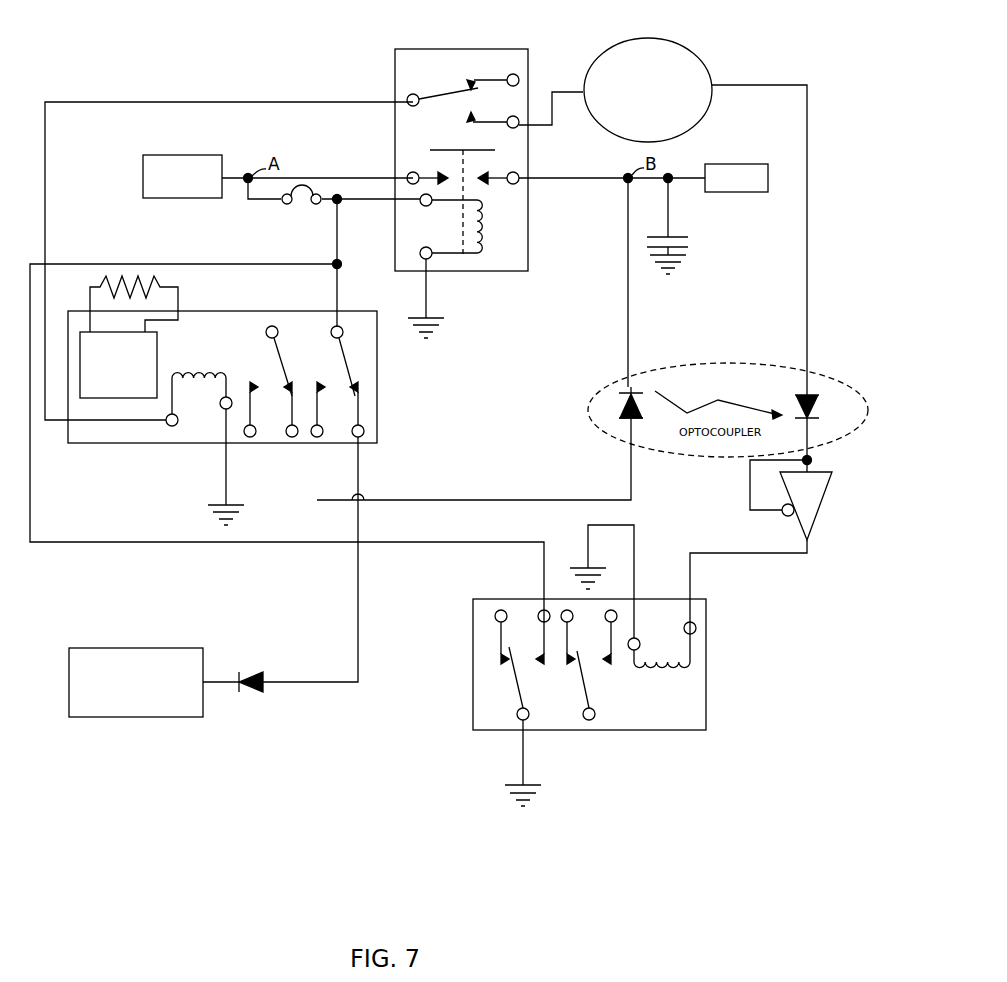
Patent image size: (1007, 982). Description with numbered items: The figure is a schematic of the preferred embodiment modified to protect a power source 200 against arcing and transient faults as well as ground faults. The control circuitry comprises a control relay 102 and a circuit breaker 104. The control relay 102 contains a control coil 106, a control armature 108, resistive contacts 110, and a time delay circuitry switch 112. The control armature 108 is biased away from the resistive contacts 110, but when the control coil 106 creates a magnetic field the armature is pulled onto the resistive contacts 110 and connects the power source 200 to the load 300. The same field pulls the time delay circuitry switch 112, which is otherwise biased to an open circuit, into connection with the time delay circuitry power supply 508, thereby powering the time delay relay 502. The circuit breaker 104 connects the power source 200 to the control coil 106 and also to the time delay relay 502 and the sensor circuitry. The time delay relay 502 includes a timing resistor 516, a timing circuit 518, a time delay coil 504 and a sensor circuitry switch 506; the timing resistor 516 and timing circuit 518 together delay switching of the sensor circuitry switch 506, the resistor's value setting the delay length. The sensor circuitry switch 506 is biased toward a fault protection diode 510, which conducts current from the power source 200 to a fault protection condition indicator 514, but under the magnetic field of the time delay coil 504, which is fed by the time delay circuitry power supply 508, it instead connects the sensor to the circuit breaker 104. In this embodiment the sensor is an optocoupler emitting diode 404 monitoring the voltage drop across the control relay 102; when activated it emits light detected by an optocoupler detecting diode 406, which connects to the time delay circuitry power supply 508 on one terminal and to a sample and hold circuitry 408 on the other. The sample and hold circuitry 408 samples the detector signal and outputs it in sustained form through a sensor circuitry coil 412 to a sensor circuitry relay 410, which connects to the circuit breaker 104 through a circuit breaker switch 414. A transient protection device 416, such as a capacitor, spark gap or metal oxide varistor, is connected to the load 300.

The control relay 102 is at (487, 49).
The circuit breaker 104 is at (308, 194).
The control coil 106 is at (487, 228).
The control armature 108 is at (452, 150).
The resistive contacts 110 is at (440, 170).
The time delay circuitry switch 112 is at (446, 84).
The power source 200 is at (172, 155).
The load 300 is at (737, 164).
The optocoupler emitting diode 404 is at (594, 385).
The optocoupler detecting diode 406 is at (815, 394).
The sample and hold circuitry 408 is at (818, 512).
The sensor circuitry relay 410 is at (615, 664).
The sensor circuitry coil 412 is at (648, 672).
The circuit breaker switch 414 is at (519, 692).
The transient protection device 416 is at (675, 234).
The time delay relay 502 is at (351, 311).
The time delay coil 504 is at (208, 373).
The sensor circuitry switch 506 is at (340, 345).
The time delay circuitry power supply 508 is at (693, 52).
The fault protection diode 510 is at (254, 690).
The fault protection condition indicator 514 is at (128, 650).
The timing resistor 516 is at (163, 290).
The timing circuit 518 is at (157, 357).